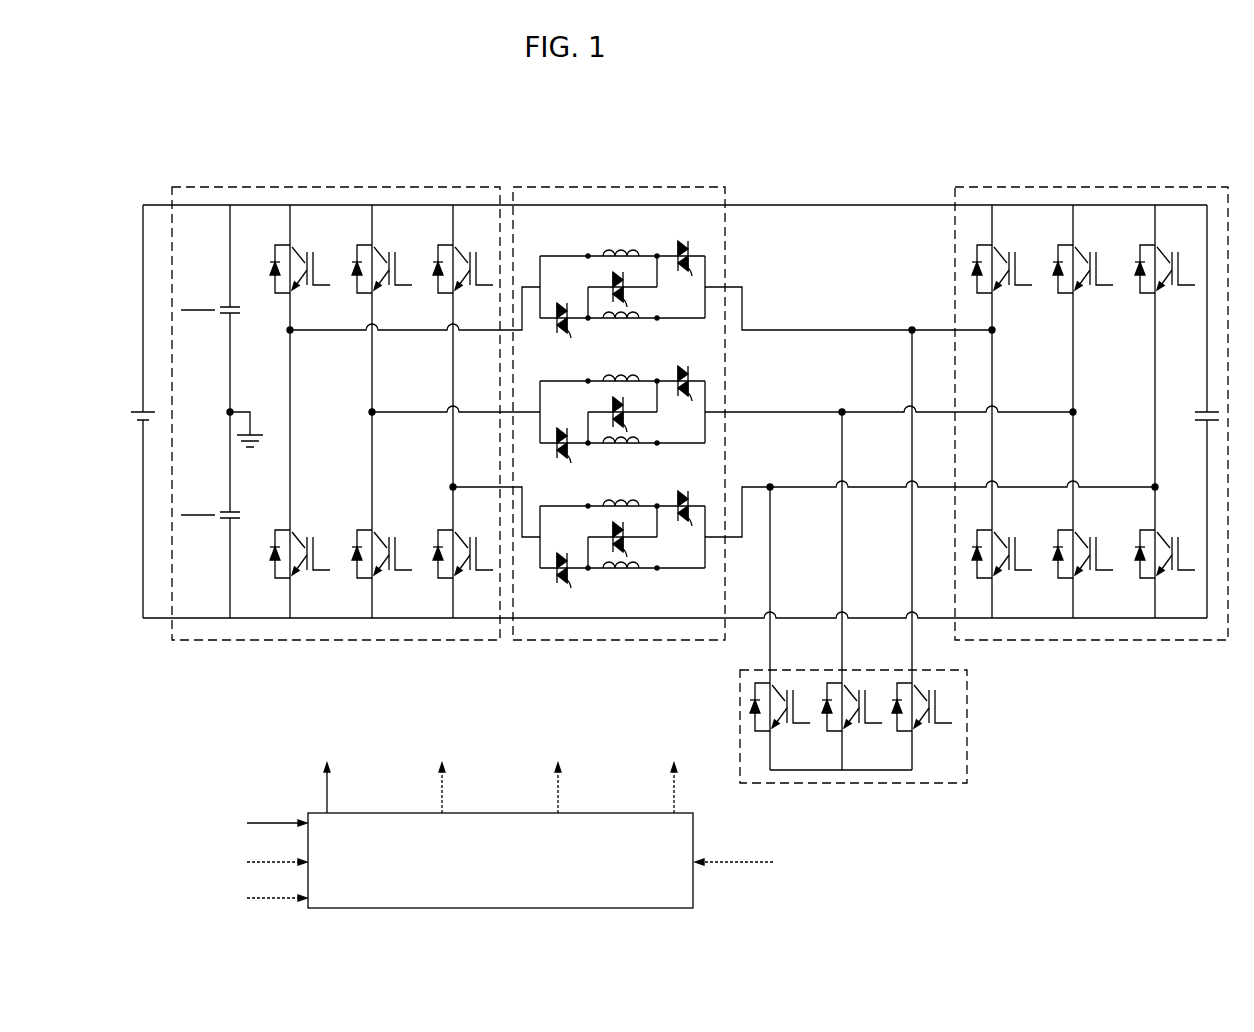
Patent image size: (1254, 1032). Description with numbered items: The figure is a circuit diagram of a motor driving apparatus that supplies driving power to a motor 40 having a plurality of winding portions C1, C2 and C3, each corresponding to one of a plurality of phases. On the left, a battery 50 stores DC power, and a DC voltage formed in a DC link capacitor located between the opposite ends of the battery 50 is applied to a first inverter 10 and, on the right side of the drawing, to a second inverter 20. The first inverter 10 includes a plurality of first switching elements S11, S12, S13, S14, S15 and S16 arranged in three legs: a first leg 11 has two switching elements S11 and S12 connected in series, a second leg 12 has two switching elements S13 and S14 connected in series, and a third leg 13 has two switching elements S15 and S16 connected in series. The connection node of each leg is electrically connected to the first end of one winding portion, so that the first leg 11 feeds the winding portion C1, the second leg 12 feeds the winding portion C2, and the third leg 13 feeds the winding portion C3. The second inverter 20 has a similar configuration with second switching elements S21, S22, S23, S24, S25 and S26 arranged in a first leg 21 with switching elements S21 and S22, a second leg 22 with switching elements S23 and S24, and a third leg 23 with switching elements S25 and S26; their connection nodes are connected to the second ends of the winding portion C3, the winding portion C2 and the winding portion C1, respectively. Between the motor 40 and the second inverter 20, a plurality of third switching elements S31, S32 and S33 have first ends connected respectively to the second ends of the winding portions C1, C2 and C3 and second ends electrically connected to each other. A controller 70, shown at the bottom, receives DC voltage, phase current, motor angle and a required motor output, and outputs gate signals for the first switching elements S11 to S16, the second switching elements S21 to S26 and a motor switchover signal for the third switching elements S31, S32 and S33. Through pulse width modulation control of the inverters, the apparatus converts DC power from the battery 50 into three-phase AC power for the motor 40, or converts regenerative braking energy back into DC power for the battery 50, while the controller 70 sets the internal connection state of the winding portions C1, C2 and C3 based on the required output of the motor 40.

The first inverter 10 is at (227, 640).
The first leg 11 is at (288, 457).
The second leg 12 is at (370, 457).
The third leg 13 is at (451, 457).
The second inverter 20 is at (1210, 640).
The first leg 21 is at (1004, 457).
The second leg 22 is at (1085, 457).
The third leg 23 is at (1167, 457).
The motor 40 is at (646, 448).
The battery 50 is at (143, 405).
The controller 70 is at (693, 893).
The winding portion C1 is at (712, 276).
The winding portion C2 is at (712, 401).
The winding portion C3 is at (712, 545).
The first switching element S11 is at (262, 233).
The first switching element S12 is at (290, 621).
The first switching element S13 is at (344, 233).
The first switching element S14 is at (372, 621).
The first switching element S15 is at (425, 233).
The first switching element S16 is at (453, 621).
The second switching element S21 is at (1016, 233).
The second switching element S22 is at (992, 621).
The second switching element S23 is at (1097, 233).
The second switching element S24 is at (1073, 621).
The second switching element S25 is at (1179, 233).
The second switching element S26 is at (1155, 621).
The third switching element S31 is at (782, 719).
The third switching element S32 is at (854, 719).
The third switching element S33 is at (924, 719).